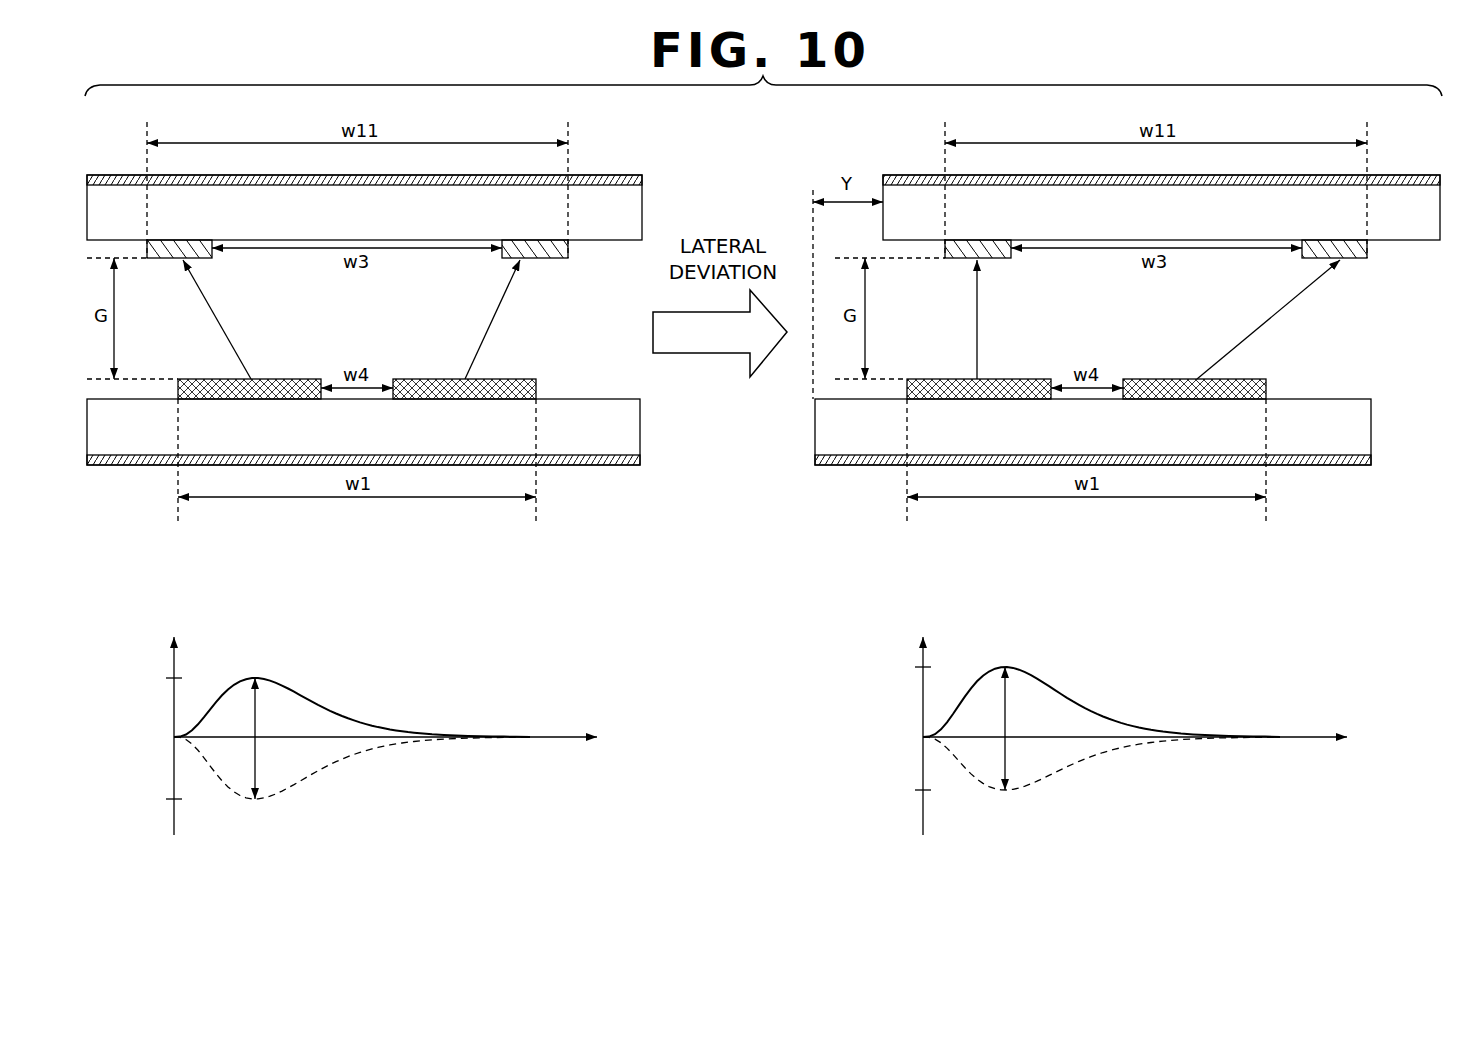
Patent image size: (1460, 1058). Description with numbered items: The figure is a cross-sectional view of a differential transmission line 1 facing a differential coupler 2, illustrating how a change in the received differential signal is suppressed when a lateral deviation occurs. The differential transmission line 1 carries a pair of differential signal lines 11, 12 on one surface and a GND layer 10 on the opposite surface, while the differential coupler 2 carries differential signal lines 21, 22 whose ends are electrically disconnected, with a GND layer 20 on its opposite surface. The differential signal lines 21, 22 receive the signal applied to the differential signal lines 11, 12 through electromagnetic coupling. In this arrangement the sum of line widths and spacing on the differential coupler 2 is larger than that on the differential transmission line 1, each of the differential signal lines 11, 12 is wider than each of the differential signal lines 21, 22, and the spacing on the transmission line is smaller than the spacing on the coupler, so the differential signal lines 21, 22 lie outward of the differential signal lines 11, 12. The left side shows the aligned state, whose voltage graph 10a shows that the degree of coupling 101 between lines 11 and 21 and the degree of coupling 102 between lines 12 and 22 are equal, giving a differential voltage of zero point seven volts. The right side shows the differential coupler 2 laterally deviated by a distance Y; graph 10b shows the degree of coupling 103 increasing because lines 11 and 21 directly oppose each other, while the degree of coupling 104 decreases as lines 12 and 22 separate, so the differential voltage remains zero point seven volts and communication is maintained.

The differential transmission line 1 is at (643, 432).
The GND layer 10 is at (572, 466).
The differential signal line 11 is at (217, 379).
The differential signal line 12 is at (537, 384).
The differential coupler 2 is at (643, 200).
The GND layer 20 is at (592, 176).
The differential signal line 21 is at (166, 259).
The differential signal line 22 is at (568, 257).
The degree of coupling 101 is at (217, 306).
The degree of coupling 102 is at (518, 315).
The degree of coupling 103 is at (979, 308).
The degree of coupling 104 is at (1284, 320).
The degree of coupling before deviation 10a is at (404, 760).
The degree of coupling after deviation 10b is at (1154, 760).